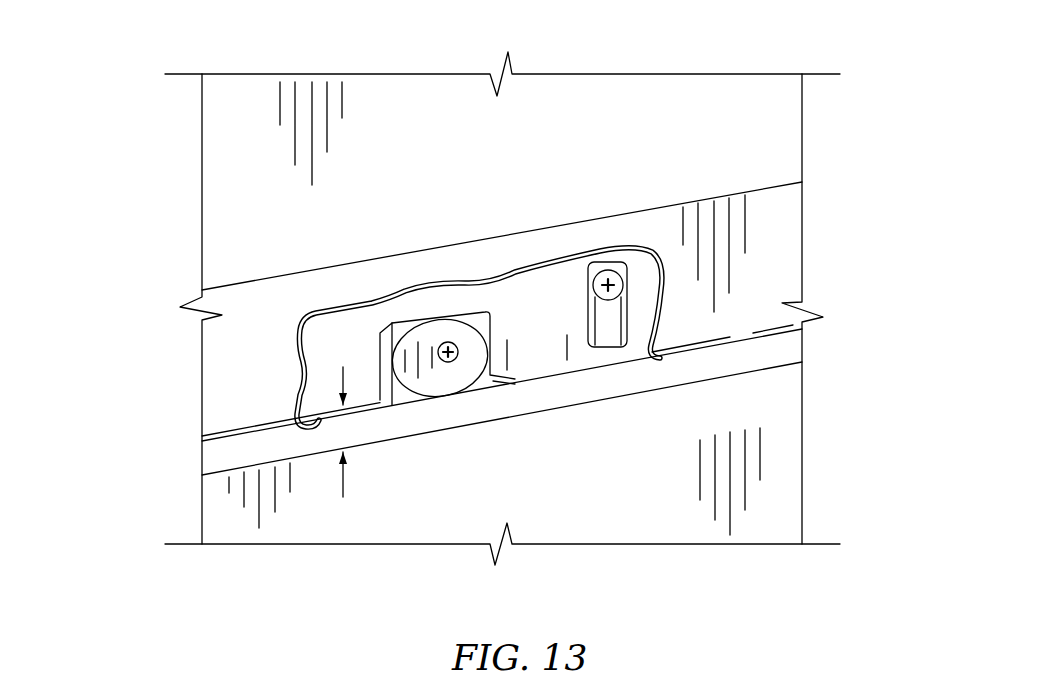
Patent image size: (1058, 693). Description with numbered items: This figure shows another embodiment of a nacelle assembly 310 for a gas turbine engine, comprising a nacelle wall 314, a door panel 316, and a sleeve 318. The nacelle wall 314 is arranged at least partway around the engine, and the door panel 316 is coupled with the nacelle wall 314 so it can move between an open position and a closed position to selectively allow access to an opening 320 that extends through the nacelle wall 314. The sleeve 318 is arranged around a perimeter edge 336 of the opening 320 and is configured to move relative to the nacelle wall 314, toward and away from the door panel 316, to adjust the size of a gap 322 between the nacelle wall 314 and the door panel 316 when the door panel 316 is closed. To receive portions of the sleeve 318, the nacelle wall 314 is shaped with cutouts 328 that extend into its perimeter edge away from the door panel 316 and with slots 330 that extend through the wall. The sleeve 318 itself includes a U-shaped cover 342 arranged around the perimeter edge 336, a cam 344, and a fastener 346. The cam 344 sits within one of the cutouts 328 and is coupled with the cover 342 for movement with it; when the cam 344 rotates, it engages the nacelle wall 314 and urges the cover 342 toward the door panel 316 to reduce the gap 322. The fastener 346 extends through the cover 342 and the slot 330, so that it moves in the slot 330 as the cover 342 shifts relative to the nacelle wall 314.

The nacelle assembly 310 is at (152, 107).
The nacelle wall 314 is at (202, 207).
The door panel 316 is at (237, 518).
The sleeve 318 is at (190, 413).
The opening 320 is at (222, 458).
The gap 322 is at (345, 485).
The cutouts 328 is at (392, 322).
The slots 330 is at (621, 327).
The perimeter edge 336 is at (630, 357).
The U-shaped cover 342 is at (243, 365).
The cam 344 is at (443, 311).
The fastener 346 is at (616, 261).